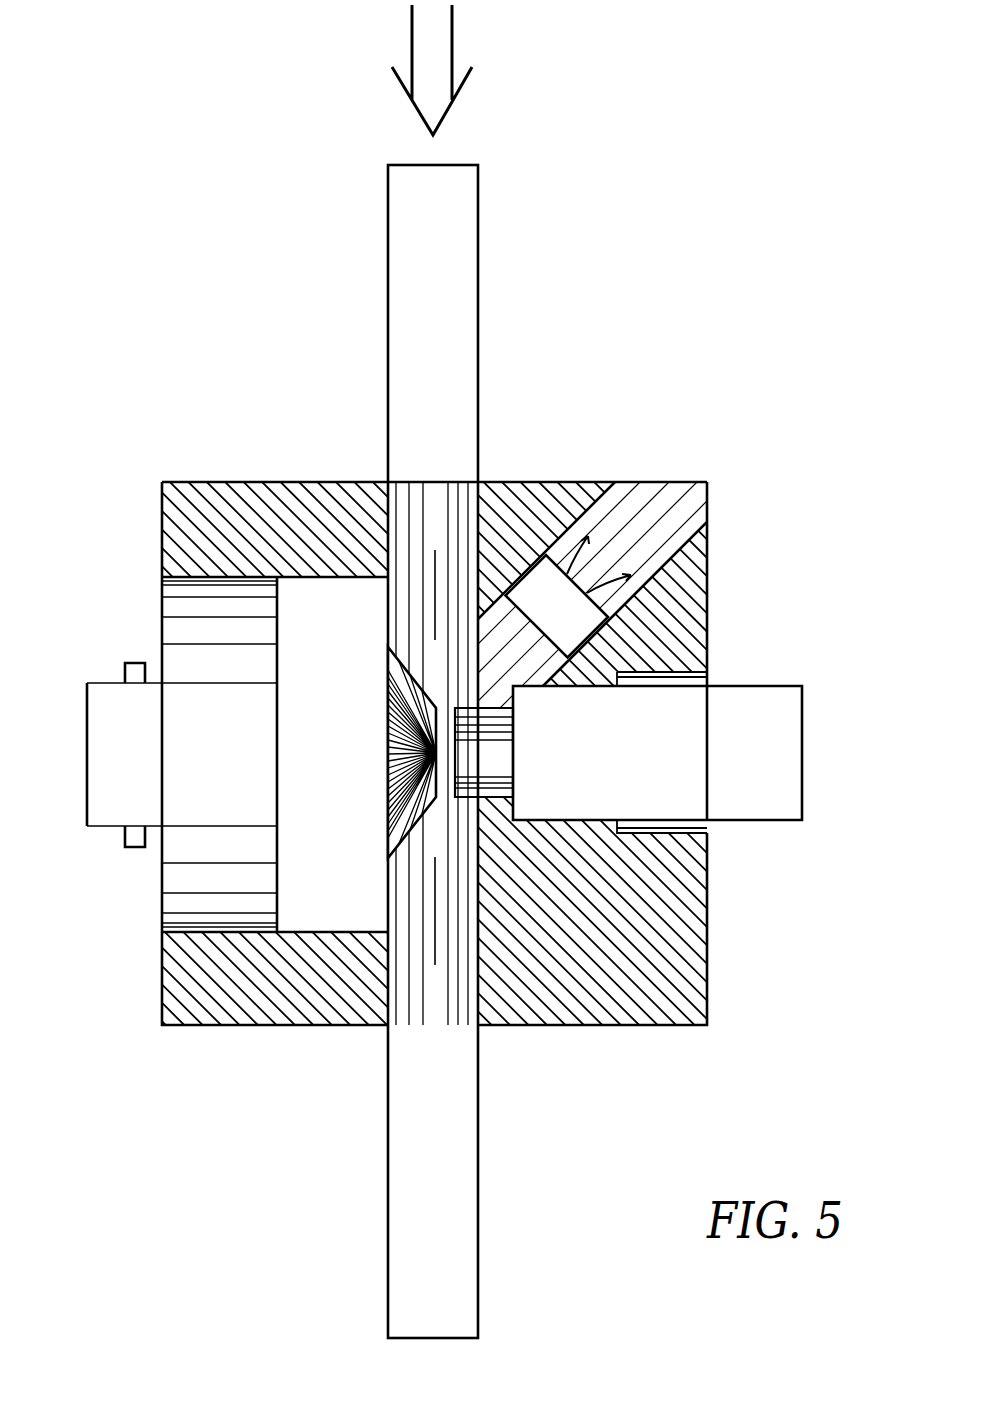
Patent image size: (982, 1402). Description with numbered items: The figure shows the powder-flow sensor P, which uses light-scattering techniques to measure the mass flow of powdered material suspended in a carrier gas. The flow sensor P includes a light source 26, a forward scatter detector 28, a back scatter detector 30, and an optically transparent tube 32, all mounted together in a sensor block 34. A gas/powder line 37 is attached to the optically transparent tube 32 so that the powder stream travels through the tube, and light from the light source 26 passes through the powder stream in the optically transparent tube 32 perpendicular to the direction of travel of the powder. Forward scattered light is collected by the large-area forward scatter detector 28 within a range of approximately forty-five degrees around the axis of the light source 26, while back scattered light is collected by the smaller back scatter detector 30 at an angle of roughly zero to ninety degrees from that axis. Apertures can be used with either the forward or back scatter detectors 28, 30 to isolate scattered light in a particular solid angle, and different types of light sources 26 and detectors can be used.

The light source 26 is at (642, 773).
The forward scatter detector 28 is at (349, 773).
The back scatter detector 30 is at (577, 625).
The optically transparent tube 32 is at (450, 1242).
The sensor block 34 is at (587, 1025).
The gas/powder line 37 is at (478, 295).
The flow sensor P is at (607, 455).